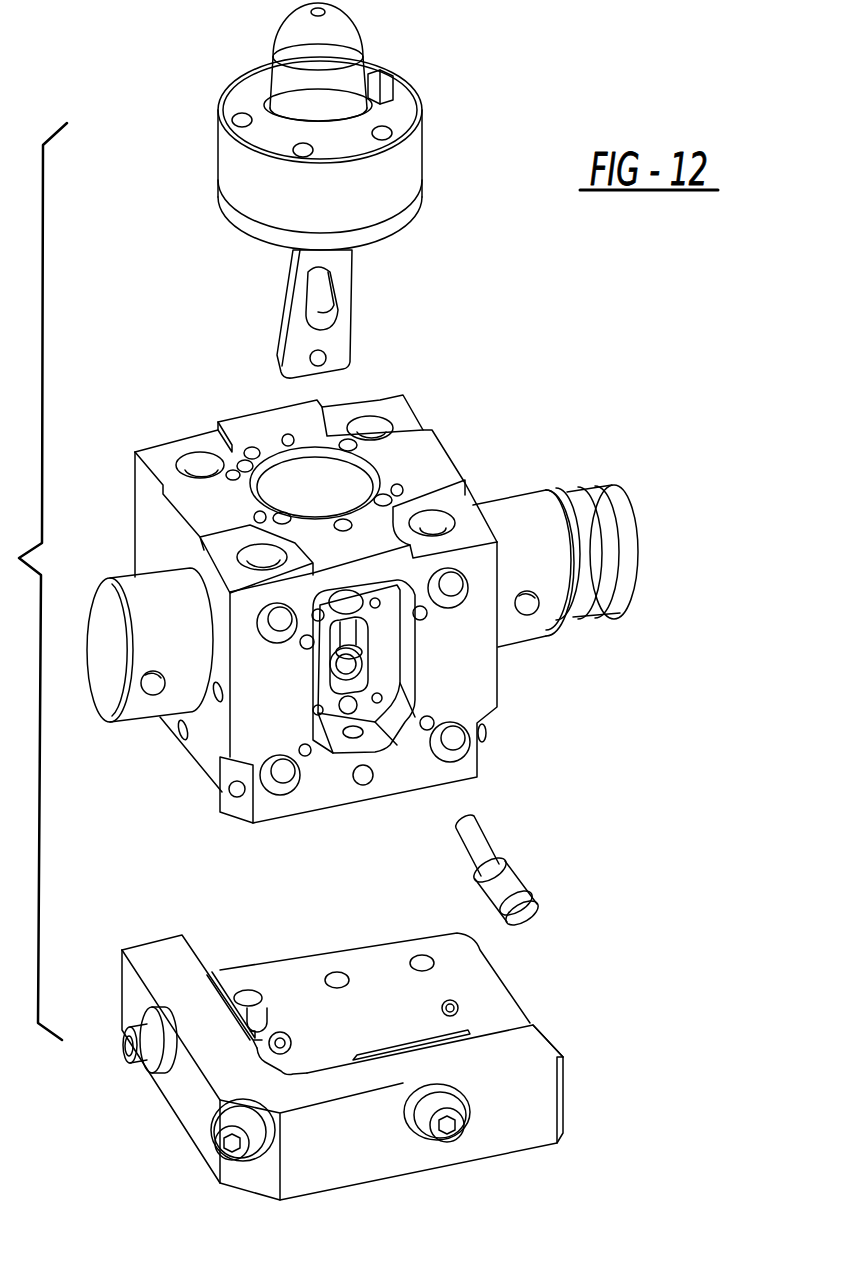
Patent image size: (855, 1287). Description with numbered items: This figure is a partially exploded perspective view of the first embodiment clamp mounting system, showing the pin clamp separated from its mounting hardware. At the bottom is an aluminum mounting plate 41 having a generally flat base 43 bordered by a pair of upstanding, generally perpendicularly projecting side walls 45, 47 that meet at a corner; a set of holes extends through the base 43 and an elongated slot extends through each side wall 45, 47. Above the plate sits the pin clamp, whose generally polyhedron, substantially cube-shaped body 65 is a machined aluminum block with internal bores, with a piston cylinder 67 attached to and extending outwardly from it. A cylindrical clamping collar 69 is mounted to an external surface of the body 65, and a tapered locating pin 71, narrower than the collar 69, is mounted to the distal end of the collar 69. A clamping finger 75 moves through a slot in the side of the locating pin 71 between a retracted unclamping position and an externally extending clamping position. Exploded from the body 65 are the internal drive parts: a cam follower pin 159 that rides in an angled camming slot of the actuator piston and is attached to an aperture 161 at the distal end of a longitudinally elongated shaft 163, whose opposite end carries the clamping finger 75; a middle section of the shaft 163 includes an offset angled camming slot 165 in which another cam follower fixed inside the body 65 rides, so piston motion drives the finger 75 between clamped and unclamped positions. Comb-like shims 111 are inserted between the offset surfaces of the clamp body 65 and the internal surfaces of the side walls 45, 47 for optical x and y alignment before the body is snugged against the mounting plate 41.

The mounting plate 41 is at (567, 1093).
The base 43 is at (462, 983).
The side wall 45 is at (347, 1143).
The side wall 47 is at (175, 972).
The body 65 is at (478, 668).
The piston cylinder 67 is at (517, 505).
The clamping collar 69 is at (403, 110).
The locating pin 71 is at (297, 85).
The clamping finger 75 is at (377, 88).
The shim 111 is at (222, 992).
The cam follower pin 159 is at (507, 880).
The aperture 161 is at (318, 358).
The shaft 163 is at (337, 273).
The camming slot 165 is at (328, 288).